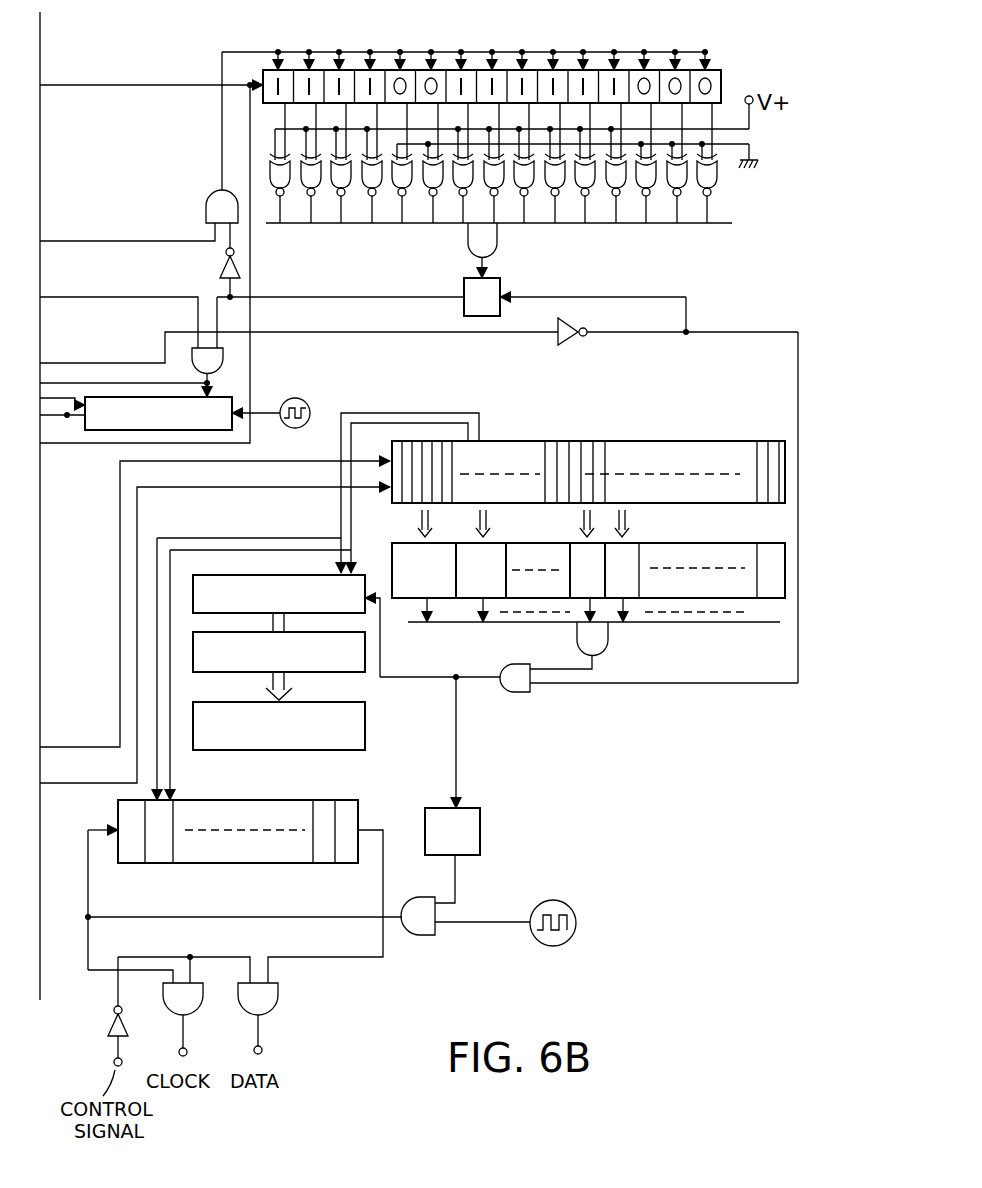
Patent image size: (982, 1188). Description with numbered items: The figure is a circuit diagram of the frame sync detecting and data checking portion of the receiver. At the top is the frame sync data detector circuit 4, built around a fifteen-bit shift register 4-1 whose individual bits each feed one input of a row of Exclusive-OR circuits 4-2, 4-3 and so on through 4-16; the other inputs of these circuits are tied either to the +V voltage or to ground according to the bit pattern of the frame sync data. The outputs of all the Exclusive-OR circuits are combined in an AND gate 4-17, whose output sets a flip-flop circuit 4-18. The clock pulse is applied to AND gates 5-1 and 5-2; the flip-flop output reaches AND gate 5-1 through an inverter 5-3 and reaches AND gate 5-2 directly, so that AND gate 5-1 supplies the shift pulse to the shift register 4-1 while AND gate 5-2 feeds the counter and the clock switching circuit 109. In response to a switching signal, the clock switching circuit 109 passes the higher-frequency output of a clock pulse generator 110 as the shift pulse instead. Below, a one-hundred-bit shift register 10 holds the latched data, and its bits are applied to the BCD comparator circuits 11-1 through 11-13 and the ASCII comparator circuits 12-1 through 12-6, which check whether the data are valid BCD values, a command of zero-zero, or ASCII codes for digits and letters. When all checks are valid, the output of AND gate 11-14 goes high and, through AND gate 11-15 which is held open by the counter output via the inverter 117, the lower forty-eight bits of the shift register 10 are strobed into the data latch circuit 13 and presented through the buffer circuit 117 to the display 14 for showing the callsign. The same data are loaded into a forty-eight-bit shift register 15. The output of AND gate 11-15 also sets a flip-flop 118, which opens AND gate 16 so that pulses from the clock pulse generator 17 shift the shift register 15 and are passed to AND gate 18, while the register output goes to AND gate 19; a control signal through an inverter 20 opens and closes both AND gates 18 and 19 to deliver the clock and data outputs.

The frame sync data detector circuit 4 is at (566, 25).
The shift register 4-1 is at (722, 70).
The Exclusive-OR circuit 4-2 is at (288, 178).
The Exclusive-OR circuit 4-3 is at (318, 178).
The Exclusive-OR circuit 4-16 is at (714, 186).
The AND gate 4-17 is at (497, 243).
The flip-flop circuit 4-18 is at (464, 310).
The AND gate 5-1 is at (206, 205).
The AND gate 5-2 is at (192, 356).
The inverter 5-3 is at (220, 274).
The clock switching circuit 109 is at (112, 432).
The clock pulse generator 110 is at (306, 402).
The shift register 10 is at (650, 441).
The ASCII comparator circuit 12-1 is at (410, 543).
The ASCII comparator circuit 12-6 is at (540, 543).
The BCD comparator circuit 11-13 is at (598, 545).
The BCD comparator circuit 11-1 is at (770, 543).
The AND gate 11-14 is at (608, 645).
The AND gate 11-15 is at (505, 692).
The data latch circuit 13 is at (250, 575).
The inverter / buffer circuit 117 is at (568, 338).
The display 14 is at (365, 735).
The shift register 15 is at (232, 863).
The flip-flop 118 is at (480, 835).
The AND gate 16 is at (425, 935).
The clock pulse generator 17 is at (573, 905).
The AND gate 18 is at (200, 1010).
The AND gate 19 is at (275, 1010).
The inverter 20 is at (108, 1030).